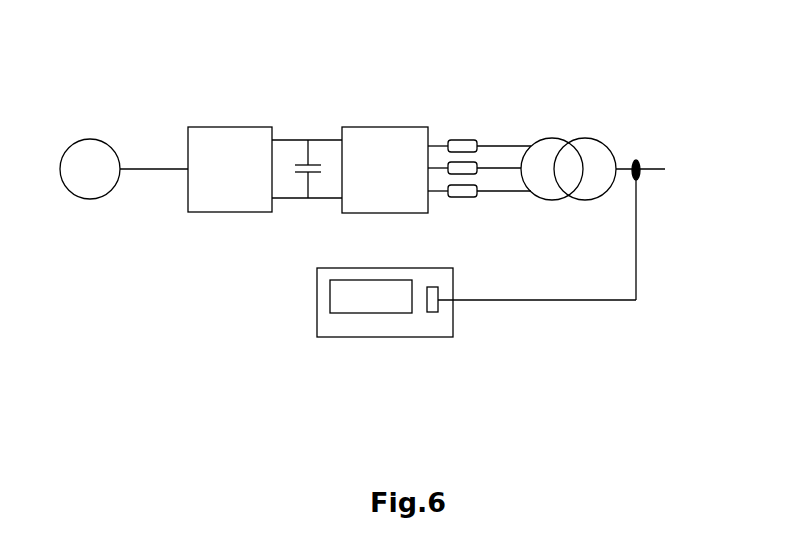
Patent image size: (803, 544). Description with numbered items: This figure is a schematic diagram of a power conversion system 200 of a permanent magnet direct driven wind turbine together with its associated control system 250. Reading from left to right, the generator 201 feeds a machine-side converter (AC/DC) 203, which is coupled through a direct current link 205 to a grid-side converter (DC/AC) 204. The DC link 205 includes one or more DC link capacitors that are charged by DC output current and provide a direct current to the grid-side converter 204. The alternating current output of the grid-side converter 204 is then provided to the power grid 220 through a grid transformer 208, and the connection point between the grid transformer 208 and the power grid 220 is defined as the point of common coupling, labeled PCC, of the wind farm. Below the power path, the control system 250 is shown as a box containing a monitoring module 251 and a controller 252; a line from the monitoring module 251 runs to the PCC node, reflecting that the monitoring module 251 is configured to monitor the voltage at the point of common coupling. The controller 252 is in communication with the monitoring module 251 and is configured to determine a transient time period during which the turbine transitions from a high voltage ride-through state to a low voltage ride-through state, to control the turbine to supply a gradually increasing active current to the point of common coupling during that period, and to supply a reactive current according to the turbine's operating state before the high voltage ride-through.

The power conversion system 200 is at (207, 62).
The generator 201 is at (84, 140).
The machine-side converter (AC/DC) 203 is at (225, 118).
The grid-side converter (DC/AC) 204 is at (372, 127).
The direct current (DC) link 205 is at (314, 160).
The grid transformer 208 is at (562, 137).
The power grid 220 is at (652, 158).
The control system 250 is at (413, 338).
The monitoring module 251 is at (440, 314).
The controller 252 is at (345, 313).